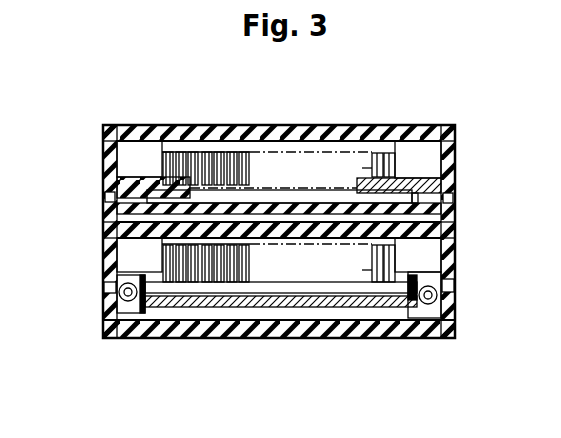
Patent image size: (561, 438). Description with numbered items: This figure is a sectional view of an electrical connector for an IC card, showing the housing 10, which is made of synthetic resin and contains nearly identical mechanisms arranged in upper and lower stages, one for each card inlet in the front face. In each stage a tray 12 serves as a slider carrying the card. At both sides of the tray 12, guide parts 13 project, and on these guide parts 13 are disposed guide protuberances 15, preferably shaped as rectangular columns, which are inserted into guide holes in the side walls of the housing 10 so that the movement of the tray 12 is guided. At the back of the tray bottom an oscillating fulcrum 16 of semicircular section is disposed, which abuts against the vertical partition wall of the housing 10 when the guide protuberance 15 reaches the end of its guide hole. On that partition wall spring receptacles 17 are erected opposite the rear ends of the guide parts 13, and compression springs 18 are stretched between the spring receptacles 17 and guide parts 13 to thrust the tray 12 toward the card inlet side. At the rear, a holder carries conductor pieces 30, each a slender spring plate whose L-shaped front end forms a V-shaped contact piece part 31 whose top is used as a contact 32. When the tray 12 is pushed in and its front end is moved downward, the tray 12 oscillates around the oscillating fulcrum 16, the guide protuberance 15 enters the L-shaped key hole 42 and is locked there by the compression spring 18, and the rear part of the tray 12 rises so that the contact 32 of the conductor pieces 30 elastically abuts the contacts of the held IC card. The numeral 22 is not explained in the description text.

The housing 10 is at (348, 126).
The tray 12 is at (428, 176).
The guide part 13 is at (106, 238).
The guide protuberance 15 is at (104, 206).
The oscillating fulcrum 16 is at (452, 265).
The spring receptacle 17 is at (104, 283).
The compression spring 18 is at (106, 330).
The coil windings 22 is at (180, 160).
The conductor piece 30 is at (166, 153).
The contact piece part 31 is at (193, 283).
The contact 32 is at (104, 154).
The key hole 42 is at (104, 197).